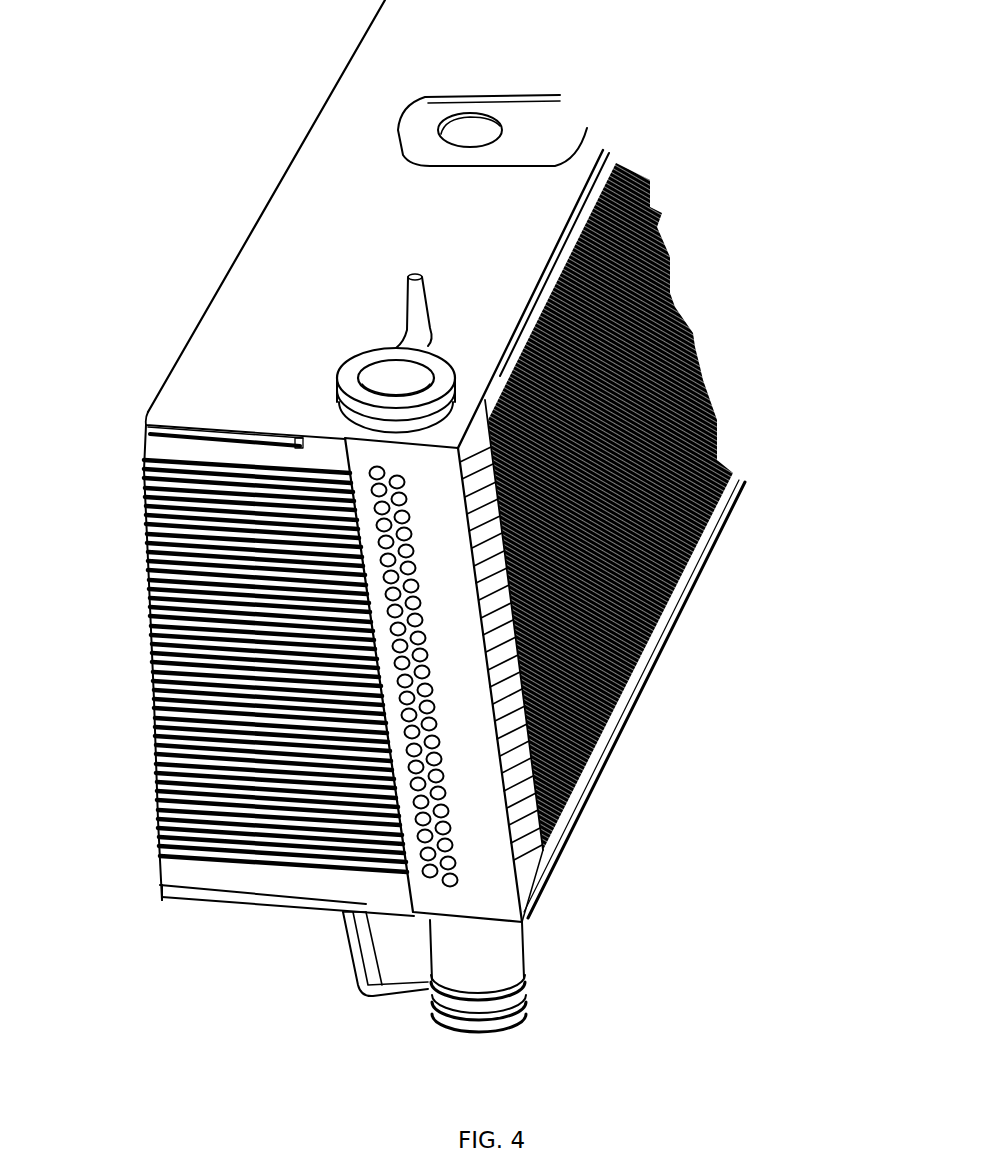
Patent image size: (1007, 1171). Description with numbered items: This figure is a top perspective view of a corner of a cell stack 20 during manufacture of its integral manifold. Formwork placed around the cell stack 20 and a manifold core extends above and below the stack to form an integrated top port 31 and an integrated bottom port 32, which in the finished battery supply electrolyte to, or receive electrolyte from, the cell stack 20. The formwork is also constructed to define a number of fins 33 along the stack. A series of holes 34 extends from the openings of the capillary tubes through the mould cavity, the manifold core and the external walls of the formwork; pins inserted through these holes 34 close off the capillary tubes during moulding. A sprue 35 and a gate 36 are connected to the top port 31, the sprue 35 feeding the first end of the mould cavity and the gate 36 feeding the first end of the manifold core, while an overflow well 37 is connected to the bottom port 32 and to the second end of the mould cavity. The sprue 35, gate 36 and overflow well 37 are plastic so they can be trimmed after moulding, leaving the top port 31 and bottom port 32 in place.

The cell stack 20 is at (449, 545).
The top port 31 is at (340, 417).
The bottom port 32 is at (510, 958).
The fins 33 is at (538, 853).
The holes 34 is at (407, 690).
The sprue 35 is at (408, 288).
The gate 36 is at (383, 370).
The overflow well 37 is at (392, 995).